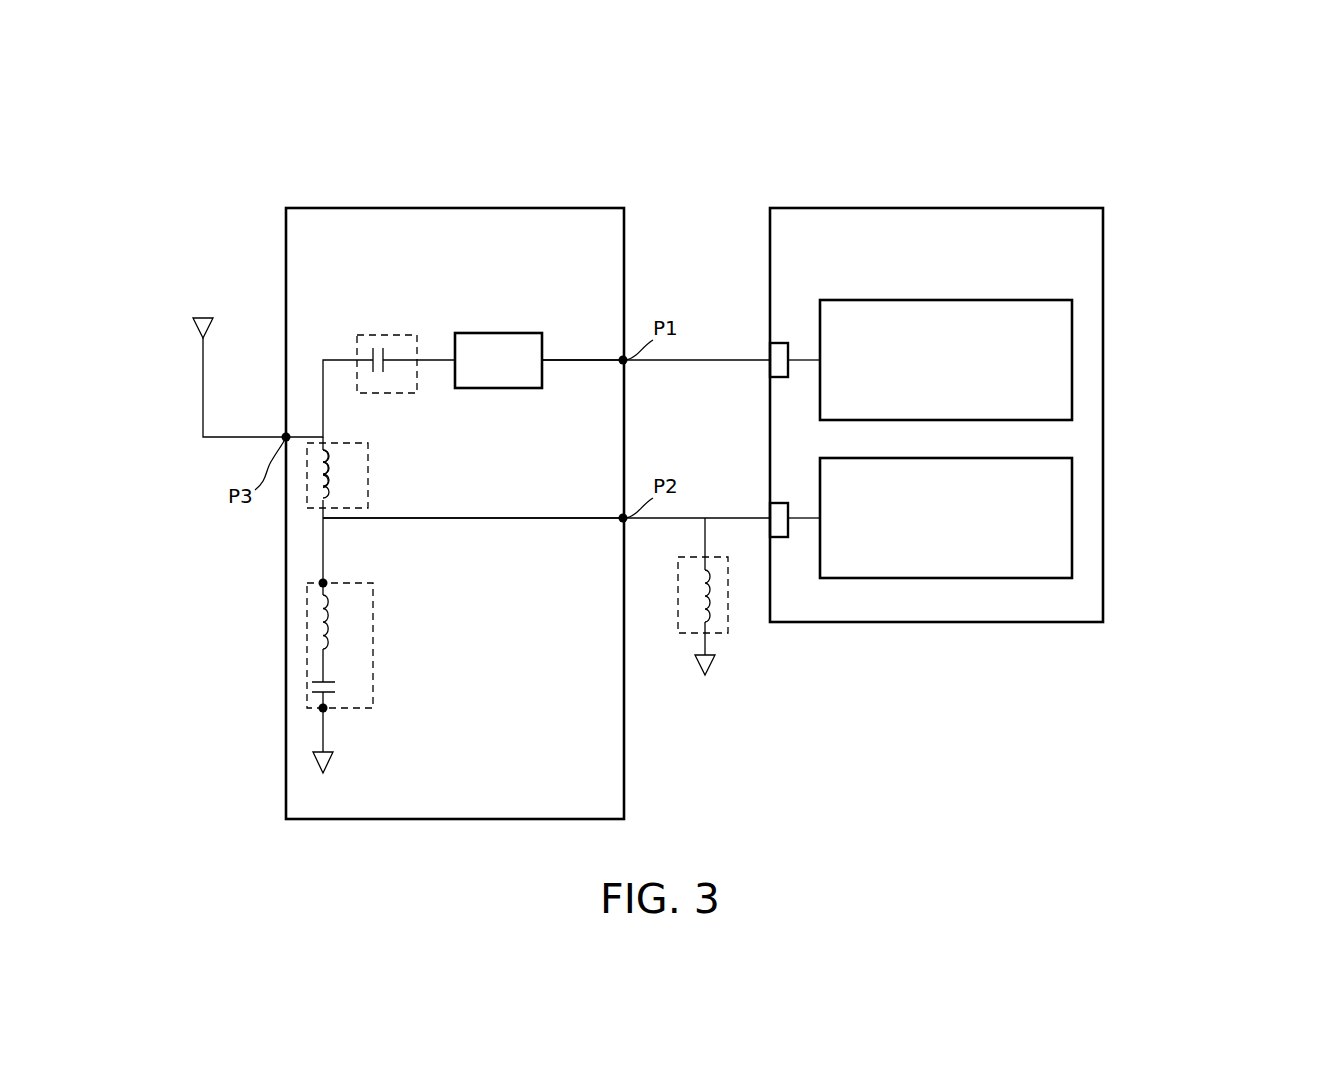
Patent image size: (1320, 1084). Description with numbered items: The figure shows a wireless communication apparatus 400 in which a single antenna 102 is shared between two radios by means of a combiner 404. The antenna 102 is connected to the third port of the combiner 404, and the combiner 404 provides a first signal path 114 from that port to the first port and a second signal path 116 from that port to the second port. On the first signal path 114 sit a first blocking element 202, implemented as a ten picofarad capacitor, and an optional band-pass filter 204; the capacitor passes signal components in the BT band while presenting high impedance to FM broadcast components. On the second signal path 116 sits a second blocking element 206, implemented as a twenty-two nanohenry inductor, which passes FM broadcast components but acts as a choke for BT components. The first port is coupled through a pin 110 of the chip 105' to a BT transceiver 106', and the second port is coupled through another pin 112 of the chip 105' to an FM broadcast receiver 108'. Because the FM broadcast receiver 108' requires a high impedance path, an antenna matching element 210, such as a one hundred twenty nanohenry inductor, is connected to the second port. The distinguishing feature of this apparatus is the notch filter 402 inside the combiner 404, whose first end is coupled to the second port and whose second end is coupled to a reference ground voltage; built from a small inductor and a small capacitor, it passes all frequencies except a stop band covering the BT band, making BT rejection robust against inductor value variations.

The wireless communication apparatus 400 is at (1161, 194).
The combiner 404 is at (466, 208).
The antenna 102 is at (200, 330).
The first blocking element 202 is at (396, 333).
The band-pass filter 204 is at (510, 333).
The second blocking element 206 is at (368, 470).
The notch filter 402 is at (373, 642).
The first signal path 114 is at (575, 368).
The second signal path 116 is at (578, 518).
The chip 105' is at (936, 383).
The pin 110 is at (780, 352).
The pin 112 is at (780, 503).
The BT transceiver 106' is at (989, 360).
The FM broadcast receiver 108' is at (990, 518).
The antenna matching element 210 is at (728, 630).